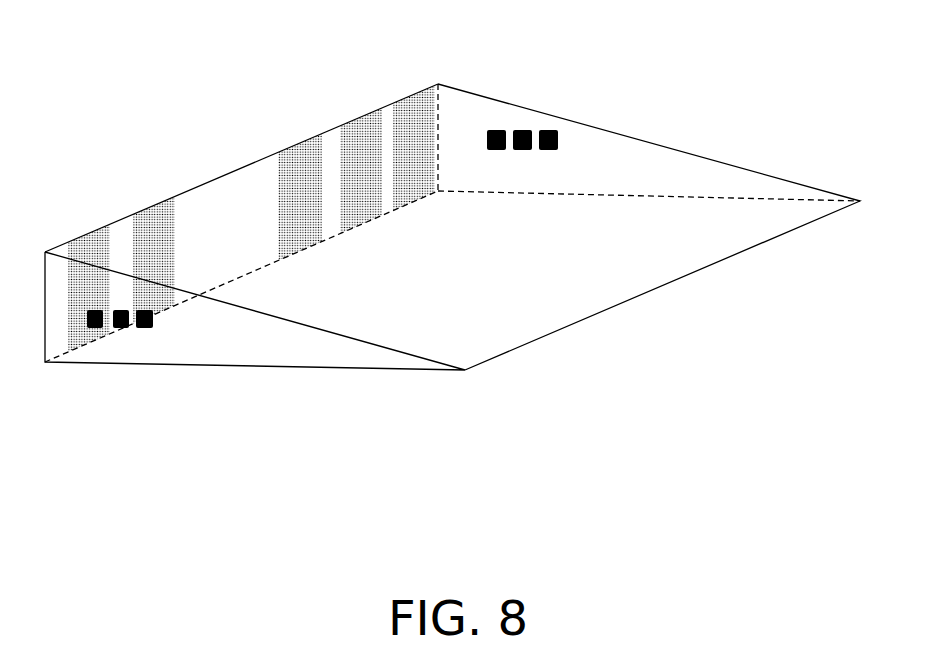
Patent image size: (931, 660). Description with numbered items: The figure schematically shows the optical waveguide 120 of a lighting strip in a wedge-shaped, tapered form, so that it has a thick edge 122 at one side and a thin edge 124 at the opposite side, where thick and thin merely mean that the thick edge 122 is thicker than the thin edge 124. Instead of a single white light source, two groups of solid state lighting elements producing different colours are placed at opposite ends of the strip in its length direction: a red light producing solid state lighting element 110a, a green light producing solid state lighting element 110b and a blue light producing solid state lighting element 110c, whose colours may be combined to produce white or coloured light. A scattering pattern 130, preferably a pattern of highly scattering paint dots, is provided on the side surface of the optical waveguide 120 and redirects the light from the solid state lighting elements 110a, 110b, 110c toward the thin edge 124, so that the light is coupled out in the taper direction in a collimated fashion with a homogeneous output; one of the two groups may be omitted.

The red light producing solid state lighting element 110a is at (95, 310).
The green light producing solid state lighting element 110b is at (122, 310).
The blue light producing solid state lighting element 110c is at (143, 330).
The optical waveguide 120 is at (350, 355).
The thick edge 122 is at (218, 200).
The thin edge 124 is at (485, 362).
The scattering pattern 130 is at (297, 170).